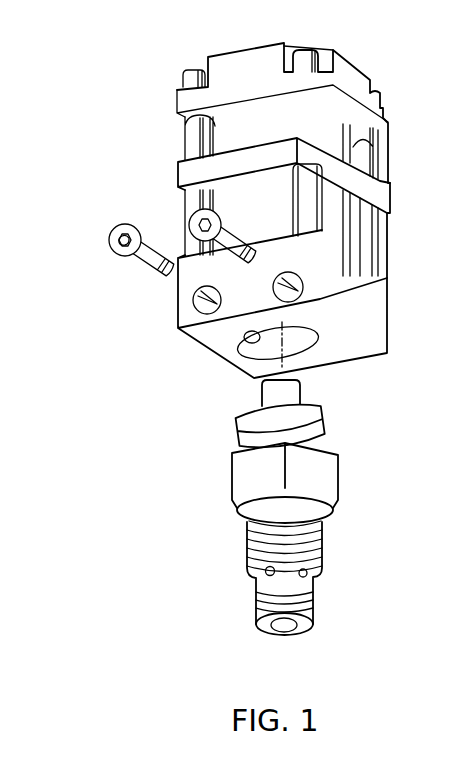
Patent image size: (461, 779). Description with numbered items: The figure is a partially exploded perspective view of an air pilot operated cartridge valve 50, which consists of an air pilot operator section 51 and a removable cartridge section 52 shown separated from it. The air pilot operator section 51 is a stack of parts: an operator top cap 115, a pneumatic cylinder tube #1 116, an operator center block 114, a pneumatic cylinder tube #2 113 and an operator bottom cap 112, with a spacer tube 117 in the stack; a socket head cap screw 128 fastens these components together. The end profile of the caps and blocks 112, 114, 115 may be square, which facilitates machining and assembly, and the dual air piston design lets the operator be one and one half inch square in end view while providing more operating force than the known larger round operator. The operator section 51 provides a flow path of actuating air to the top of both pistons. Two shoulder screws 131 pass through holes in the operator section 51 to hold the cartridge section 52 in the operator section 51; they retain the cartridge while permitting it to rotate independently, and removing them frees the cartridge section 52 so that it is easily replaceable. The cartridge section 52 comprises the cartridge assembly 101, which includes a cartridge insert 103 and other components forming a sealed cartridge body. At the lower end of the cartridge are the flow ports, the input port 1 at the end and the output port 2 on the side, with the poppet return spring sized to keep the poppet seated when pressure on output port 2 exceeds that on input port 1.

The air pilot operated cartridge valve 50 is at (117, 19).
The air pilot operator section 51 is at (385, 51).
The cartridge section 52 is at (365, 440).
The operator bottom cap 112 is at (378, 307).
The pneumatic cylinder tube #2 113 is at (340, 227).
The operator center block 114 is at (381, 195).
The operator top cap 115 is at (381, 121).
The pneumatic cylinder tube #1 116 is at (345, 143).
The spacer tube 117 is at (183, 138).
The socket head cap screw 128 is at (195, 70).
The shoulder screw 131 is at (190, 212).
The cartridge insert 103 is at (240, 422).
The cartridge assembly 101 is at (231, 500).
The output port 2 is at (270, 576).
The input port 1 is at (277, 628).